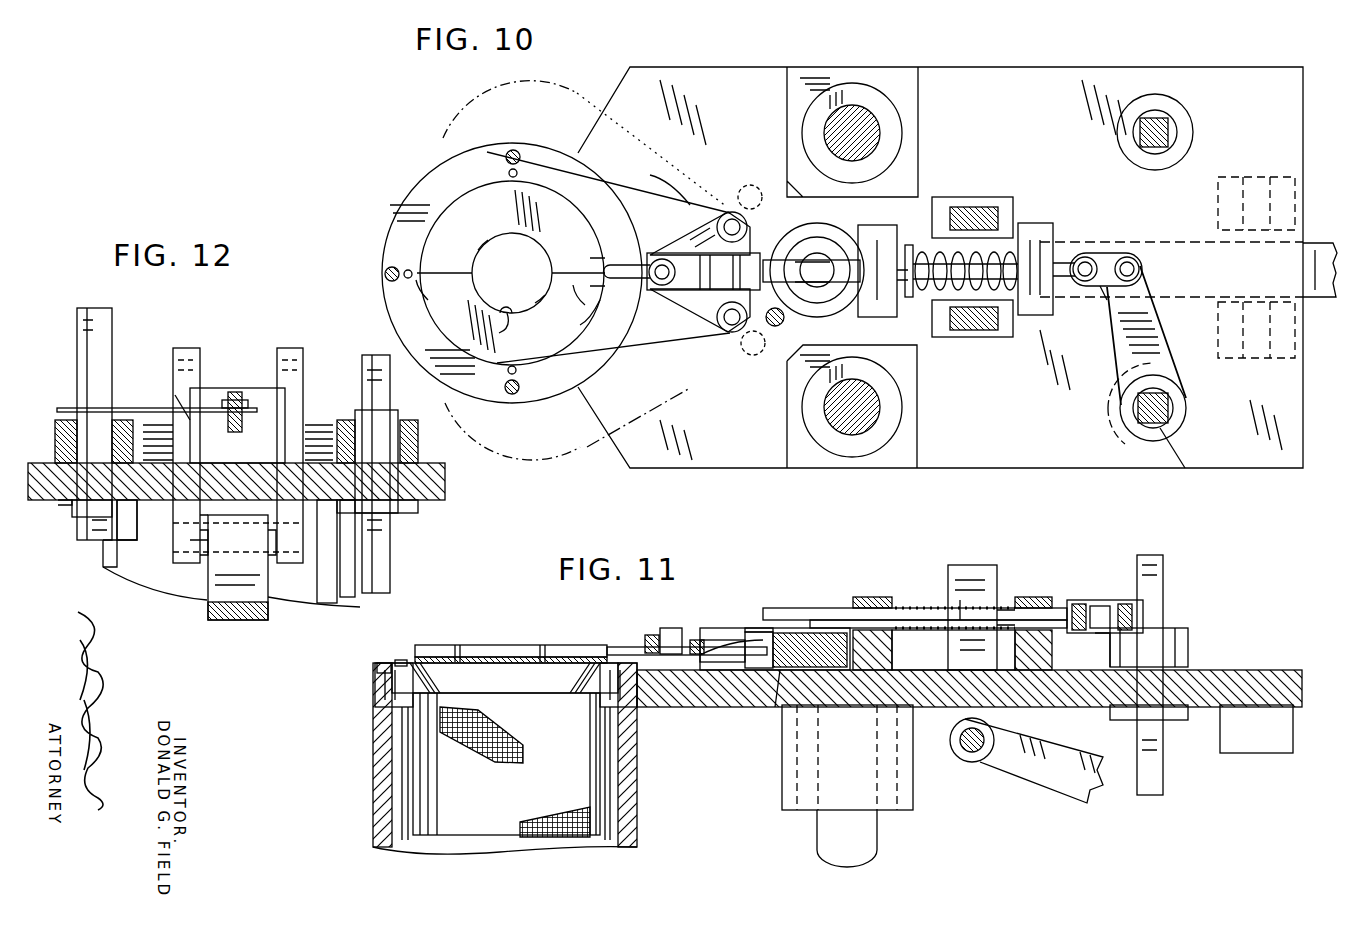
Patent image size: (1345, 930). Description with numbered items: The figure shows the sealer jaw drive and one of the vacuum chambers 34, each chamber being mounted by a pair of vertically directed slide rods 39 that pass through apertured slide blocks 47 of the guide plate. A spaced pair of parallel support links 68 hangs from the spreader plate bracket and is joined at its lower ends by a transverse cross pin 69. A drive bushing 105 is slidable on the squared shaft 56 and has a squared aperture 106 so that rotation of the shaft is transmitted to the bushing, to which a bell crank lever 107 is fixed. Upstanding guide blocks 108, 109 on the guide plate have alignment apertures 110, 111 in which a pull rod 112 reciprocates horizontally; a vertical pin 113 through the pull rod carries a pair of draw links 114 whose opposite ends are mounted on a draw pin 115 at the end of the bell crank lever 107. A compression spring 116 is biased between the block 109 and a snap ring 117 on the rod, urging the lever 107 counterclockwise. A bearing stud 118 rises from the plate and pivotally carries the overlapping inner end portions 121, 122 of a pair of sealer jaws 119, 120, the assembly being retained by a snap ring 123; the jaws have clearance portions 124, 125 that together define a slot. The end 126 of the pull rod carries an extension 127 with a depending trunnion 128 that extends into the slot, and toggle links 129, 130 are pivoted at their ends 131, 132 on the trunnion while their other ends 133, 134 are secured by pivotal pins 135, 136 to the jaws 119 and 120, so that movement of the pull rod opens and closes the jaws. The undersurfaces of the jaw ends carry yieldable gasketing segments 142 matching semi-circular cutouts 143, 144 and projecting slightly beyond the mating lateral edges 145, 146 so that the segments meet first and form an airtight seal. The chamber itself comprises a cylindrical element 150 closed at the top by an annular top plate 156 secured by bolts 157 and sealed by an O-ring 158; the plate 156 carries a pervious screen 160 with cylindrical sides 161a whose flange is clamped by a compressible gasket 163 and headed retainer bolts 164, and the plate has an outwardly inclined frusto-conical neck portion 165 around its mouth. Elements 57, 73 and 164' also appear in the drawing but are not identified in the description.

In FIG. 12, the vacuum chamber 34 is at (350, 603).
In FIG. 11, the vacuum chamber 34 is at (375, 795).
In FIG. 10, the slide rod 39 is at (878, 133).
In FIG. 11, the slide rod 39 is at (878, 845).
In FIG. 10, the slide block 47 is at (905, 67).
In FIG. 11, the slide block 47 is at (785, 800).
In FIG. 10, the squared shaft 56 is at (1174, 414).
In FIG. 12, the squared shaft 56 is at (78, 363).
In FIG. 10, the shaft 57 is at (1170, 132).
In FIG. 11, the shaft 57 is at (1163, 783).
In FIG. 10, the support link 68 is at (975, 210).
In FIG. 12, the support link 68 is at (175, 348).
In FIG. 11, the support link 68 is at (976, 565).
In FIG. 10, the cross pin 69 is at (955, 332).
In FIG. 12, the cross pin 69 is at (205, 560).
In FIG. 11, the cross pin 69 is at (968, 762).
In FIG. 12, the lever gear 73 is at (258, 565).
In FIG. 11, the lever gear 73 is at (1000, 775).
In FIG. 10, the drive bushing 105 is at (1120, 422).
In FIG. 11, the drive bushing 105 is at (1190, 645).
In FIG. 10, the squared aperture 106 is at (1170, 468).
In FIG. 12, the squared aperture 106 is at (80, 402).
In FIG. 10, the bell crank lever 107 is at (1182, 360).
In FIG. 12, the bell crank lever 107 is at (158, 410).
In FIG. 10, the guide block 108 is at (892, 232).
In FIG. 11, the guide block 108 is at (876, 597).
In FIG. 10, the guide block 109 is at (1035, 226).
In FIG. 12, the guide block 109 is at (270, 422).
In FIG. 11, the guide block 109 is at (1040, 590).
In FIG. 10, the alignment aperture 110 is at (897, 292).
In FIG. 11, the alignment aperture 110 is at (896, 610).
In FIG. 10, the alignment aperture 111 is at (1050, 310).
In FIG. 11, the alignment aperture 111 is at (1005, 597).
In FIG. 10, the pull rod 112 is at (1068, 258).
In FIG. 11, the pull rod 112 is at (1068, 600).
In FIG. 10, the pin 113 is at (1090, 258).
In FIG. 11, the pin 113 is at (1085, 605).
In FIG. 10, the draw link 114 is at (1100, 290).
In FIG. 12, the draw link 114 is at (256, 390).
In FIG. 11, the draw link 114 is at (1100, 633).
In FIG. 10, the draw pin 115 is at (1147, 257).
In FIG. 12, the draw pin 115 is at (240, 395).
In FIG. 11, the draw pin 115 is at (1163, 590).
In FIG. 10, the compression spring 116 is at (1000, 240).
In FIG. 11, the compression spring 116 is at (958, 598).
In FIG. 10, the snap ring 117 is at (912, 250).
In FIG. 11, the snap ring 117 is at (953, 650).
In FIG. 11, the bearing stud 118 is at (777, 707).
In FIG. 10, the sealer jaw 119 is at (465, 203).
In FIG. 11, the sealer jaw 119 is at (430, 646).
In FIG. 10, the sealer jaw 120 is at (440, 322).
In FIG. 10, the inner end portion 121 is at (800, 225).
In FIG. 11, the inner end portion 121 is at (763, 618).
In FIG. 10, the inner end portion 122 is at (815, 290).
In FIG. 11, the inner end portion 122 is at (763, 705).
In FIG. 10, the snap ring 123 is at (808, 236).
In FIG. 11, the snap ring 123 is at (820, 630).
In FIG. 10, the clearance portion 124 is at (617, 258).
In FIG. 11, the clearance portion 124 is at (620, 648).
In FIG. 10, the clearance portion 125 is at (612, 288).
In FIG. 10, the end of pull rod 126 is at (795, 262).
In FIG. 11, the end of pull rod 126 is at (790, 632).
In FIG. 10, the extension 127 is at (752, 300).
In FIG. 11, the extension 127 is at (730, 638).
In FIG. 10, the trunnion 128 is at (622, 302).
In FIG. 11, the trunnion 128 is at (668, 628).
In FIG. 10, the toggle link 129 is at (692, 212).
In FIG. 12, the toggle link 129 is at (402, 440).
In FIG. 11, the toggle link 129 is at (645, 642).
In FIG. 10, the toggle link 130 is at (700, 320).
In FIG. 12, the toggle link 130 is at (170, 432).
In FIG. 10, the end of toggle link 131 is at (660, 258).
In FIG. 10, the end of toggle link 132 is at (668, 292).
In FIG. 10, the other end of toggle link 133 is at (732, 178).
In FIG. 11, the other end of toggle link 133 is at (712, 662).
In FIG. 10, the other end of toggle link 134 is at (748, 356).
In FIG. 10, the pivotal pin 135 is at (725, 213).
In FIG. 12, the pivotal pin 135 is at (372, 402).
In FIG. 11, the pivotal pin 135 is at (752, 630).
In FIG. 10, the pivotal pin 136 is at (648, 407).
In FIG. 12, the pivotal pin 136 is at (175, 395).
In FIG. 11, the gasketing segment 142 is at (458, 650).
In FIG. 10, the semi-circular cutout 143 is at (478, 257).
In FIG. 11, the semi-circular cutout 143 is at (508, 650).
In FIG. 10, the semi-circular cutout 144 is at (520, 330).
In FIG. 10, the mating lateral edge 145 is at (458, 272).
In FIG. 10, the mating lateral edge 146 is at (502, 298).
In FIG. 11, the mating lateral edge 146 is at (570, 651).
In FIG. 11, the cylindrical element 150 is at (375, 840).
In FIG. 11, the annular top plate 156 is at (376, 668).
In FIG. 11, the bolt 157 is at (405, 660).
In FIG. 11, the O-ring gasket 158 is at (376, 690).
In FIG. 11, the pervious cage or screen 160 is at (600, 805).
In FIG. 11, the cylindrical sides 161a is at (610, 822).
In FIG. 11, the compressible annular gasket 163 is at (637, 720).
In FIG. 11, the headed retainer bolt 164 is at (422, 732).
In FIG. 11, the mesh 164' is at (555, 754).
In FIG. 11, the frusto-conical neck portion 165 is at (432, 665).